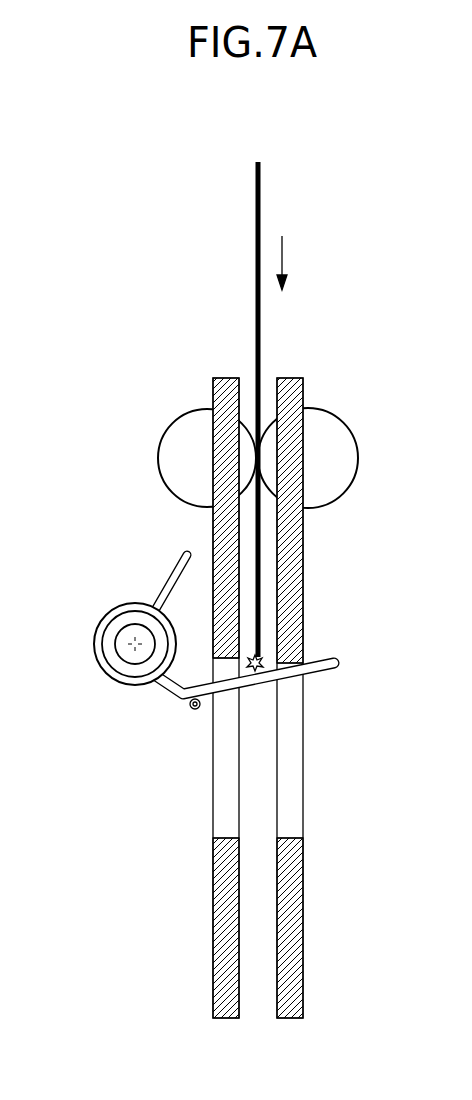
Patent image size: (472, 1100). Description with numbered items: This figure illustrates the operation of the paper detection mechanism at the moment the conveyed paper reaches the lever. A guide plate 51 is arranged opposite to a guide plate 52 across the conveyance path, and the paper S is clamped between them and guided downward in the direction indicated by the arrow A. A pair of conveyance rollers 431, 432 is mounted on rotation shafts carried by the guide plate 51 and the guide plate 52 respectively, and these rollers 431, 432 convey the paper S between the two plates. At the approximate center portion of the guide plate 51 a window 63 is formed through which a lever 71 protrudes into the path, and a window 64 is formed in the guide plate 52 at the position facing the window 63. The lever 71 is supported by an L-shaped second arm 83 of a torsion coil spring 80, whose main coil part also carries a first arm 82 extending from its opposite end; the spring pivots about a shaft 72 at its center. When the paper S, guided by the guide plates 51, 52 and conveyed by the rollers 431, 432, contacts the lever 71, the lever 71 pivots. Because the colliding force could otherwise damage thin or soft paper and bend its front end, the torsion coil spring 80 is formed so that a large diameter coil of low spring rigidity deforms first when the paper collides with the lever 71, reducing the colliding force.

The conveyance roller 431 is at (162, 440).
The conveyance roller 432 is at (357, 440).
The guide plate 51 is at (212, 912).
The guide plate 52 is at (305, 905).
The window 63 is at (224, 818).
The window 64 is at (290, 812).
The lever 71 is at (340, 660).
The rotation shaft 72 is at (124, 668).
The torsion coil spring 80 is at (93, 648).
The first arm 82 is at (165, 580).
The second arm 83 is at (193, 710).
The paper S is at (262, 331).
The arrow A is at (281, 248).